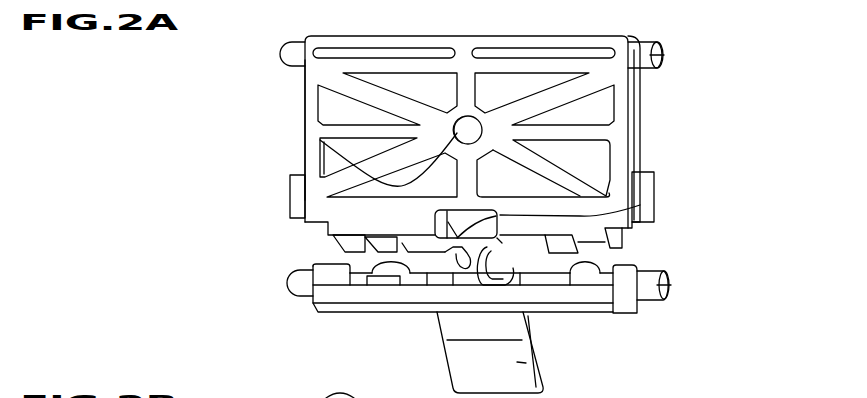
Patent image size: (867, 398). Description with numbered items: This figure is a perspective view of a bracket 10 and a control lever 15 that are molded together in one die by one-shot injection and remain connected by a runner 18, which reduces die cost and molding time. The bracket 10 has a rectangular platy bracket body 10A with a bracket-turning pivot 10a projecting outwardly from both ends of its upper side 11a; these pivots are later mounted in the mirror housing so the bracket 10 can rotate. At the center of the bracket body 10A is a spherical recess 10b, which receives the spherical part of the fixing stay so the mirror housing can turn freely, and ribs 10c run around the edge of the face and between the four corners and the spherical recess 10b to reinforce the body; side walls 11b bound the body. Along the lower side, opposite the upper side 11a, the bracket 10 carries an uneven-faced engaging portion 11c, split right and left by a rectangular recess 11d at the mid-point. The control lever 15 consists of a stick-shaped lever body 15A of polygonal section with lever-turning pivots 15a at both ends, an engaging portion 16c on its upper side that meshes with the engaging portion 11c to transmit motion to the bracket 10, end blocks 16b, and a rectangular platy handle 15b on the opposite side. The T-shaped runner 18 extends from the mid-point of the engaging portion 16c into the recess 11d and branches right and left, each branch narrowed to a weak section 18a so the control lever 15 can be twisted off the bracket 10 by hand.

The bracket 10 is at (742, 103).
The bracket body 10A is at (641, 90).
The bracket-turning pivot 10a is at (283, 53).
The spherical recess 10b is at (385, 162).
The ribs 10c is at (467, 90).
The upper side 11a is at (376, 36).
The side walls 11b is at (305, 90).
The engaging portion 11c is at (356, 243).
The rectangular recess 11d is at (435, 226).
The control lever 15 is at (740, 306).
The lever body 15A is at (619, 317).
The lever-turning pivots 15a is at (297, 283).
The rectangular platy handle 15b is at (524, 363).
The rail end blocks 16b is at (313, 299).
The engaging portion 16c is at (385, 285).
The runner 18 is at (457, 262).
The weak section 18a is at (548, 257).